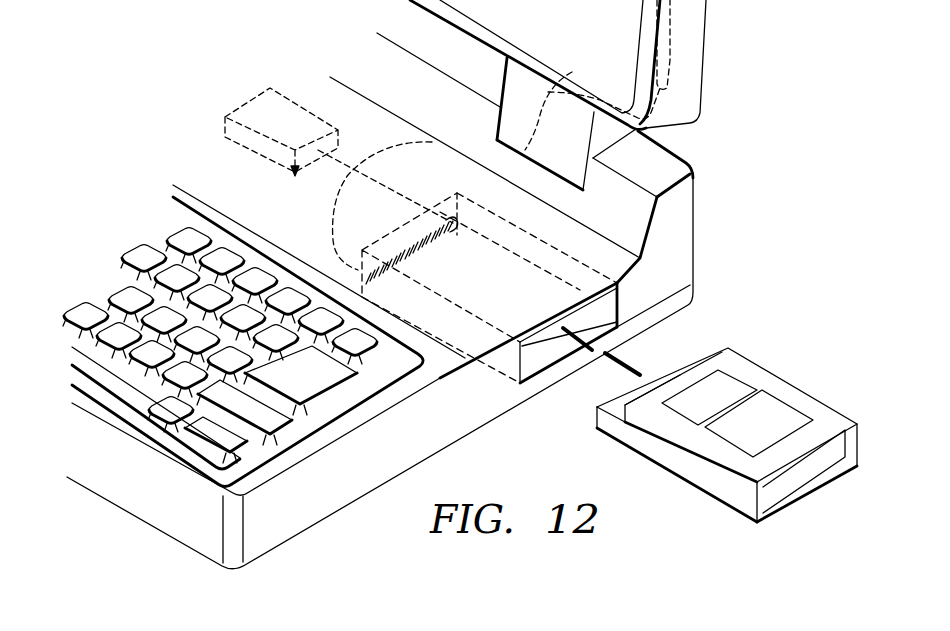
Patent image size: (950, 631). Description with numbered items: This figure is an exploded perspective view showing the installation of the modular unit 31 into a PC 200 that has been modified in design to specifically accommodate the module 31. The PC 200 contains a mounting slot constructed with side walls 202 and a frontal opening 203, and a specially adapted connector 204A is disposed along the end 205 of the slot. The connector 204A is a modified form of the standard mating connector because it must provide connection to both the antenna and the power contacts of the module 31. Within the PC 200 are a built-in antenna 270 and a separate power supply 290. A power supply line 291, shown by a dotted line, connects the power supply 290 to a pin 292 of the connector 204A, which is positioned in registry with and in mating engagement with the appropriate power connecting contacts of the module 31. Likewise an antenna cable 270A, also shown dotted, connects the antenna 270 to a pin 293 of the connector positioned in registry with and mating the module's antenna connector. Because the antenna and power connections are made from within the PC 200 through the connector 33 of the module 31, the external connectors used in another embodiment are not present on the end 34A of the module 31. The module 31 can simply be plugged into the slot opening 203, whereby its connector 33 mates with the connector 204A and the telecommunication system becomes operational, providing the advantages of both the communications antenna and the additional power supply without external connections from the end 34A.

The PC 200 is at (688, 227).
The side walls 202 is at (553, 254).
The frontal opening 203 is at (537, 358).
The specially adapted connector 204A is at (440, 262).
The end 205 is at (447, 220).
The antenna 270 is at (672, 60).
The antenna cable 270A is at (572, 72).
The power supply 290 is at (257, 100).
The power supply line 291 is at (352, 163).
The pin 292 is at (325, 248).
The pin 293 is at (473, 212).
The modular unit 31 is at (762, 362).
The connector 33 is at (690, 358).
The end 34A is at (788, 480).